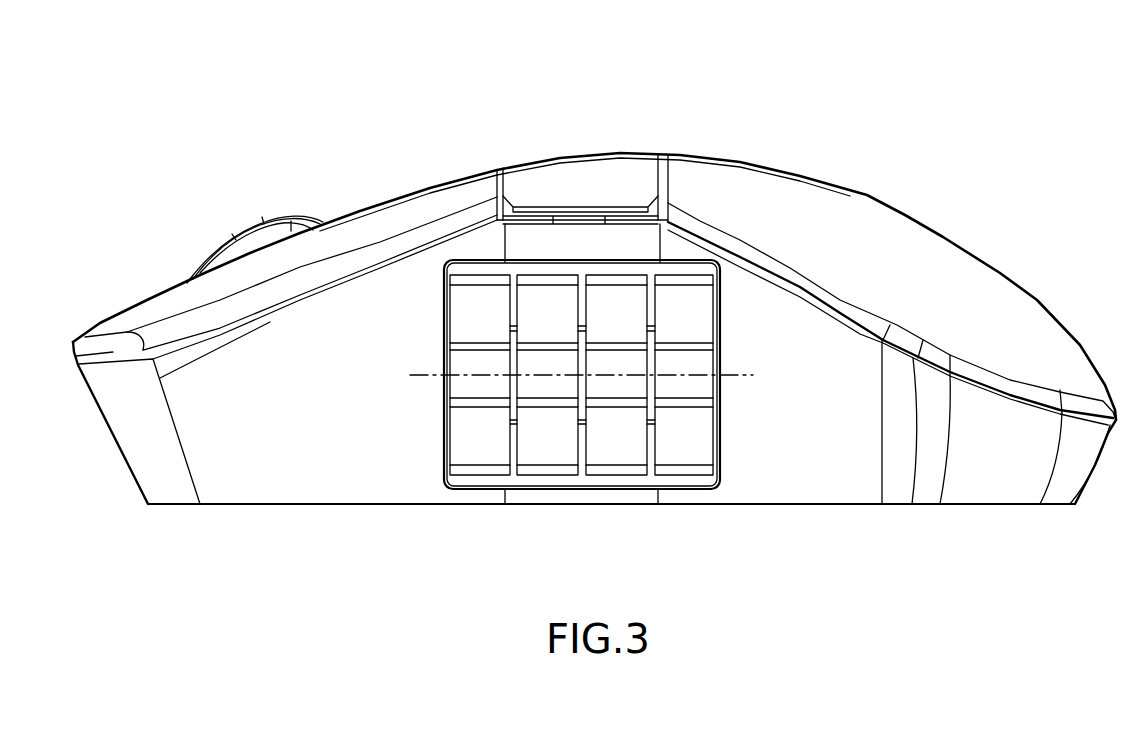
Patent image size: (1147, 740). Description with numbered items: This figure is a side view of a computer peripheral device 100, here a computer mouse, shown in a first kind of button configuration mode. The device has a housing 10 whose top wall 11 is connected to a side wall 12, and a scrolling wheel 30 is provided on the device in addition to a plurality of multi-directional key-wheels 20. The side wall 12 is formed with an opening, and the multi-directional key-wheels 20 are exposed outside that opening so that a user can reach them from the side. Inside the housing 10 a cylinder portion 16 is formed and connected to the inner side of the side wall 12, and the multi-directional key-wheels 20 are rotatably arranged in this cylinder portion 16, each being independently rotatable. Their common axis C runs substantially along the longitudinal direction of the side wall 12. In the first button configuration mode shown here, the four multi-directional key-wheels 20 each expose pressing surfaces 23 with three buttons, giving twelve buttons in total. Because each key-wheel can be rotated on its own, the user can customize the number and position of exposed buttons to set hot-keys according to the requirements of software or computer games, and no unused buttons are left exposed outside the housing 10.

The computer peripheral device 100 is at (125, 73).
The housing 10 is at (867, 196).
The top wall 11 is at (922, 258).
The side wall 12 is at (323, 487).
The cylinder portion 16 is at (700, 482).
The multi-directional key-wheel 20 is at (686, 478).
The pressing surface 23 is at (465, 386).
The scrolling wheel 30 is at (237, 224).
The axis C is at (743, 378).